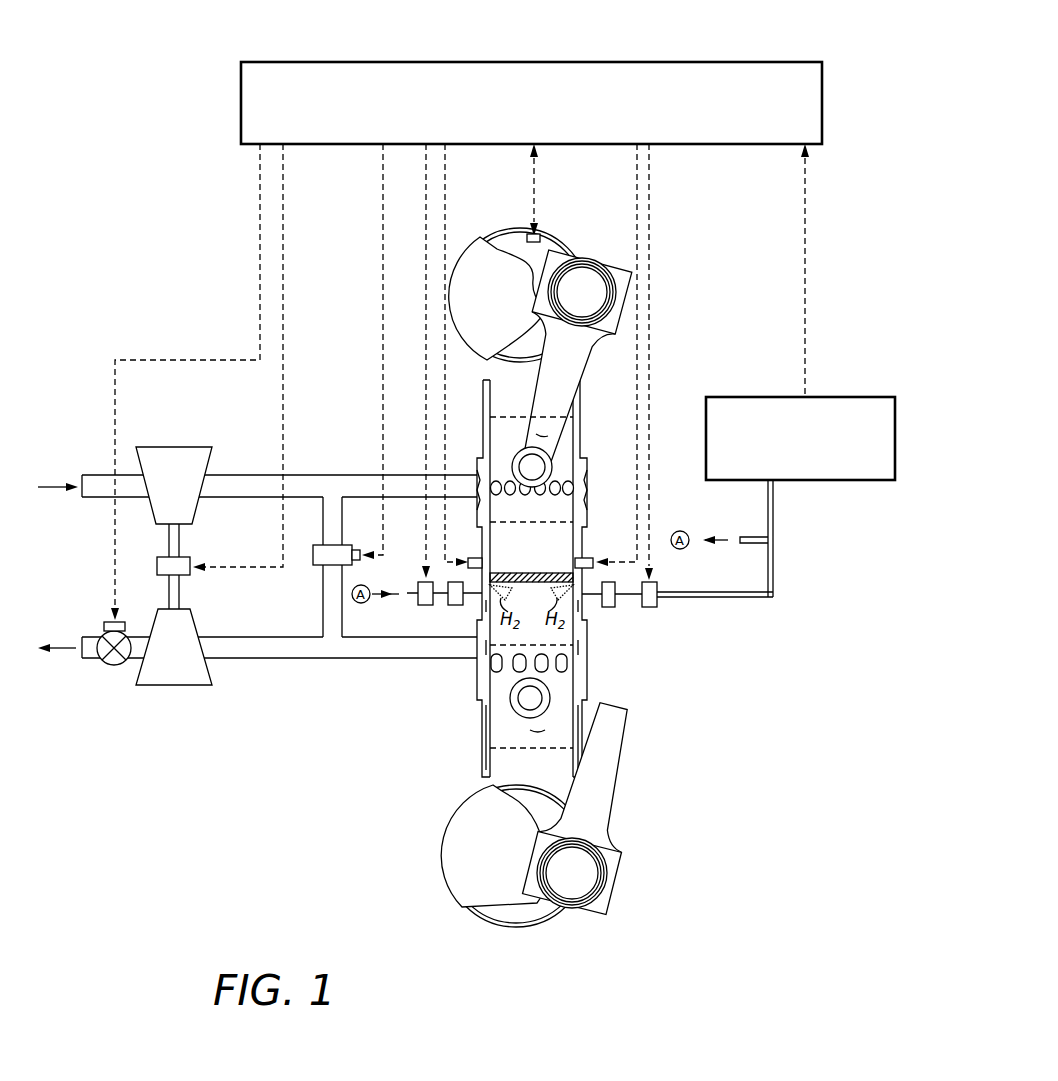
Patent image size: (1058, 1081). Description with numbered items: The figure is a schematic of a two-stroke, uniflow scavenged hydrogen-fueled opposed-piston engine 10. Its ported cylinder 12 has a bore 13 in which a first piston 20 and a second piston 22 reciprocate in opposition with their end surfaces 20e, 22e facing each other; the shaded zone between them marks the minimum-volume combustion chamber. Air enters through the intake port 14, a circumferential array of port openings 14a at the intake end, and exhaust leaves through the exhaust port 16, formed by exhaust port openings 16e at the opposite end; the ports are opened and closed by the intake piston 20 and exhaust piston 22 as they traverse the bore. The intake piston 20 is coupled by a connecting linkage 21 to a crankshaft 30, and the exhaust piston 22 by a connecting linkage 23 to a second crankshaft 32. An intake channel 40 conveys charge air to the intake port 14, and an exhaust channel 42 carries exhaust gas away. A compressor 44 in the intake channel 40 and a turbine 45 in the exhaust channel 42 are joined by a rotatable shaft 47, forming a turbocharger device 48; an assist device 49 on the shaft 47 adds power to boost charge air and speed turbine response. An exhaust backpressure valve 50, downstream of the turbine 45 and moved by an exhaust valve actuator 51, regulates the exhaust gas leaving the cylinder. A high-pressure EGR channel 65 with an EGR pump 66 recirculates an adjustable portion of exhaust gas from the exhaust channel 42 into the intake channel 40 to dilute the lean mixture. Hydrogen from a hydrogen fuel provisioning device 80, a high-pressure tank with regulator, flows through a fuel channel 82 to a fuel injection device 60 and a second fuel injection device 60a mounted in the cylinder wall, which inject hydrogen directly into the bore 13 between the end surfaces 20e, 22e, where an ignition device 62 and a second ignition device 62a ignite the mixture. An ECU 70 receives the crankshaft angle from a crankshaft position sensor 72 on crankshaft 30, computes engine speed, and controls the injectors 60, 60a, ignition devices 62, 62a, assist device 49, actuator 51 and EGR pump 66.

The hydrogen-fueled opposed-piston engine 10 is at (850, 294).
The ported cylinder 12 is at (578, 394).
The bore 13 is at (540, 556).
The intake port 14 is at (588, 488).
The intake ports 14a is at (568, 480).
The exhaust port 16 is at (580, 663).
The exhaust port openings 16e is at (560, 673).
The first piston 20 is at (568, 425).
The end surface of first piston 20e is at (558, 520).
The connecting linkage 21 is at (564, 359).
The second piston 22 is at (542, 738).
The end surface of second piston 22e is at (568, 647).
The connecting linkage 23 is at (563, 793).
The crankshaft 30 is at (572, 244).
The crankshaft 32 is at (527, 927).
The intake channel 40 is at (455, 471).
The exhaust channel 42 is at (440, 660).
The compressor 44 is at (193, 447).
The turbine 45 is at (173, 687).
The rotatable shaft 47 is at (180, 545).
The turbocharger device 48 is at (246, 578).
The assist device 49 is at (185, 577).
The exhaust backpressure valve 50 is at (113, 666).
The exhaust valve actuator 51 is at (105, 626).
The fuel injection device 60 is at (648, 608).
The second fuel injection device 60a is at (455, 607).
The ignition device 62 is at (587, 553).
The second ignition device 62a is at (477, 558).
The high-pressure EGR channel 65 is at (323, 577).
The EGR pump 66 is at (343, 551).
The ECU 70 is at (705, 61).
The crankshaft position sensor 72 is at (537, 235).
The hydrogen fuel provisioning device 80 is at (896, 441).
The fuel channel 82 is at (773, 497).